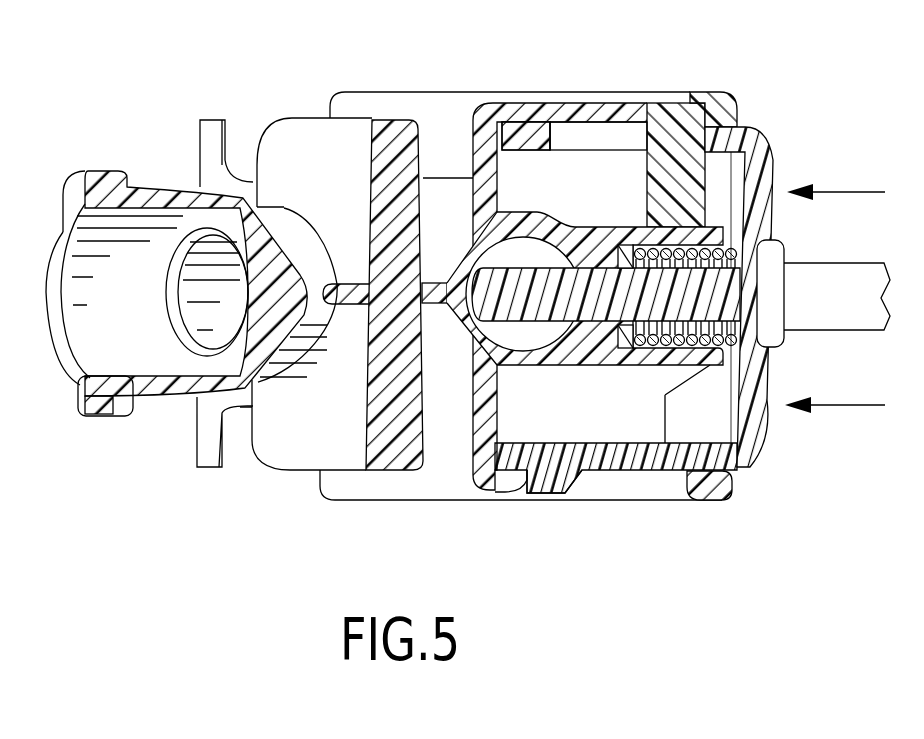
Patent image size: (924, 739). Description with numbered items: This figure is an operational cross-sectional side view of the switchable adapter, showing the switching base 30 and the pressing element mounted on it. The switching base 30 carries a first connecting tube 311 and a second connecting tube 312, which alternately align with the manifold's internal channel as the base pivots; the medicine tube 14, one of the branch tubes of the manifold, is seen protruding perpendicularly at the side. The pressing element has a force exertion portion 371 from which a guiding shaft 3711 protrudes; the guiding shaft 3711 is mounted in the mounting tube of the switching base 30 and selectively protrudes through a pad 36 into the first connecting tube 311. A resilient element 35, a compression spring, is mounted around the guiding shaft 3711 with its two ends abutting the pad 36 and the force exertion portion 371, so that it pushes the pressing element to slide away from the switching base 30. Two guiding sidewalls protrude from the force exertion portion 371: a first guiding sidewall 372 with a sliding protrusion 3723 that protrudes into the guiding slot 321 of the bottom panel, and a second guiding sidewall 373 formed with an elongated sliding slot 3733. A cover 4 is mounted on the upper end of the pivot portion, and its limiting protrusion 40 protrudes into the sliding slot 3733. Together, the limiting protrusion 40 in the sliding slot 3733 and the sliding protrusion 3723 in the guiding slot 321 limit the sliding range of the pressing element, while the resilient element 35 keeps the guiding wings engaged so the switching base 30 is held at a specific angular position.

The cover 4 is at (370, 88).
The switching base 30 is at (366, 504).
The second connecting tube 312 is at (194, 200).
The first connecting tube 311 is at (520, 220).
The guiding shaft 3711 is at (693, 286).
The pad 36 is at (624, 346).
The resilient element 35 is at (738, 345).
The second guiding sidewall 373 is at (546, 135).
The sliding slot 3733 is at (622, 140).
The limiting protrusion 40 is at (718, 110).
The force exertion portion 371 is at (762, 148).
The medicine tube 14 is at (775, 258).
The first guiding sidewall 372 is at (660, 472).
The sliding protrusion 3723 is at (568, 482).
The guiding slot 321 is at (528, 486).